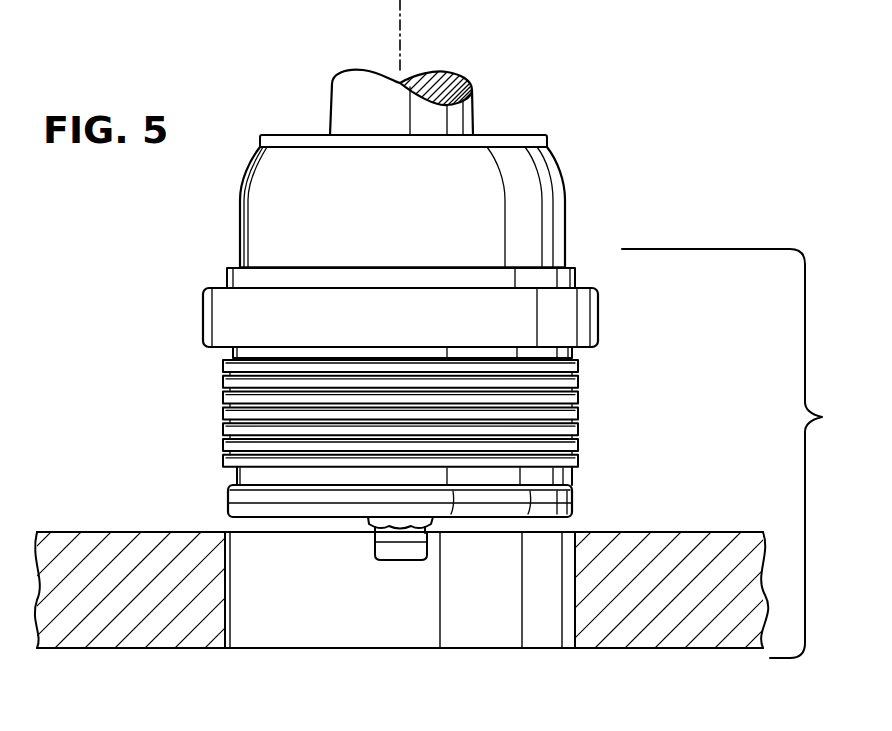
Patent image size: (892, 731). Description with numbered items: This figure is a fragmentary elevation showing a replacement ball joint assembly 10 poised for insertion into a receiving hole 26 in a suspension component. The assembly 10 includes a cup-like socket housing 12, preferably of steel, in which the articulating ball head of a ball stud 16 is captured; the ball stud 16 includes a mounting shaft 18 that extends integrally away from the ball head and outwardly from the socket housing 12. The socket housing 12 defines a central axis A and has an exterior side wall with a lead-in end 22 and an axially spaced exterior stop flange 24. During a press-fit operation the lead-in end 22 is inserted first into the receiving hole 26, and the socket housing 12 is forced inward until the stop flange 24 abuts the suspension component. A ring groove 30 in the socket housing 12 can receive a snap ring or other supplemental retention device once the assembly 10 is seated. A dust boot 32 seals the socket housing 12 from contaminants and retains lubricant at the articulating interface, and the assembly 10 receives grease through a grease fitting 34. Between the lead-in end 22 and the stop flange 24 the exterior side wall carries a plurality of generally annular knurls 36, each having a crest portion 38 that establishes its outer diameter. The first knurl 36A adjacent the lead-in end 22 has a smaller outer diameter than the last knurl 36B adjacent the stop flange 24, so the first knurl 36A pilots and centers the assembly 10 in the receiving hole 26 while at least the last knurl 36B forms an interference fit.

The replacement ball joint assembly 10 is at (634, 79).
The socket housing 12 is at (405, 295).
The ball stud 16 is at (480, 96).
The mounting shaft 18 is at (329, 111).
The lead-in end 22 is at (540, 520).
The stop flange 24 is at (577, 352).
The receiving hole 26 is at (228, 623).
The ring groove 30 is at (566, 477).
The dust boot 32 is at (553, 175).
The grease fitting 34 is at (373, 548).
The knurls 36 is at (378, 427).
The first knurl 36A is at (224, 460).
The last knurl 36B is at (223, 367).
The crest portion 38 is at (85, 649).
The central axis A is at (403, 51).